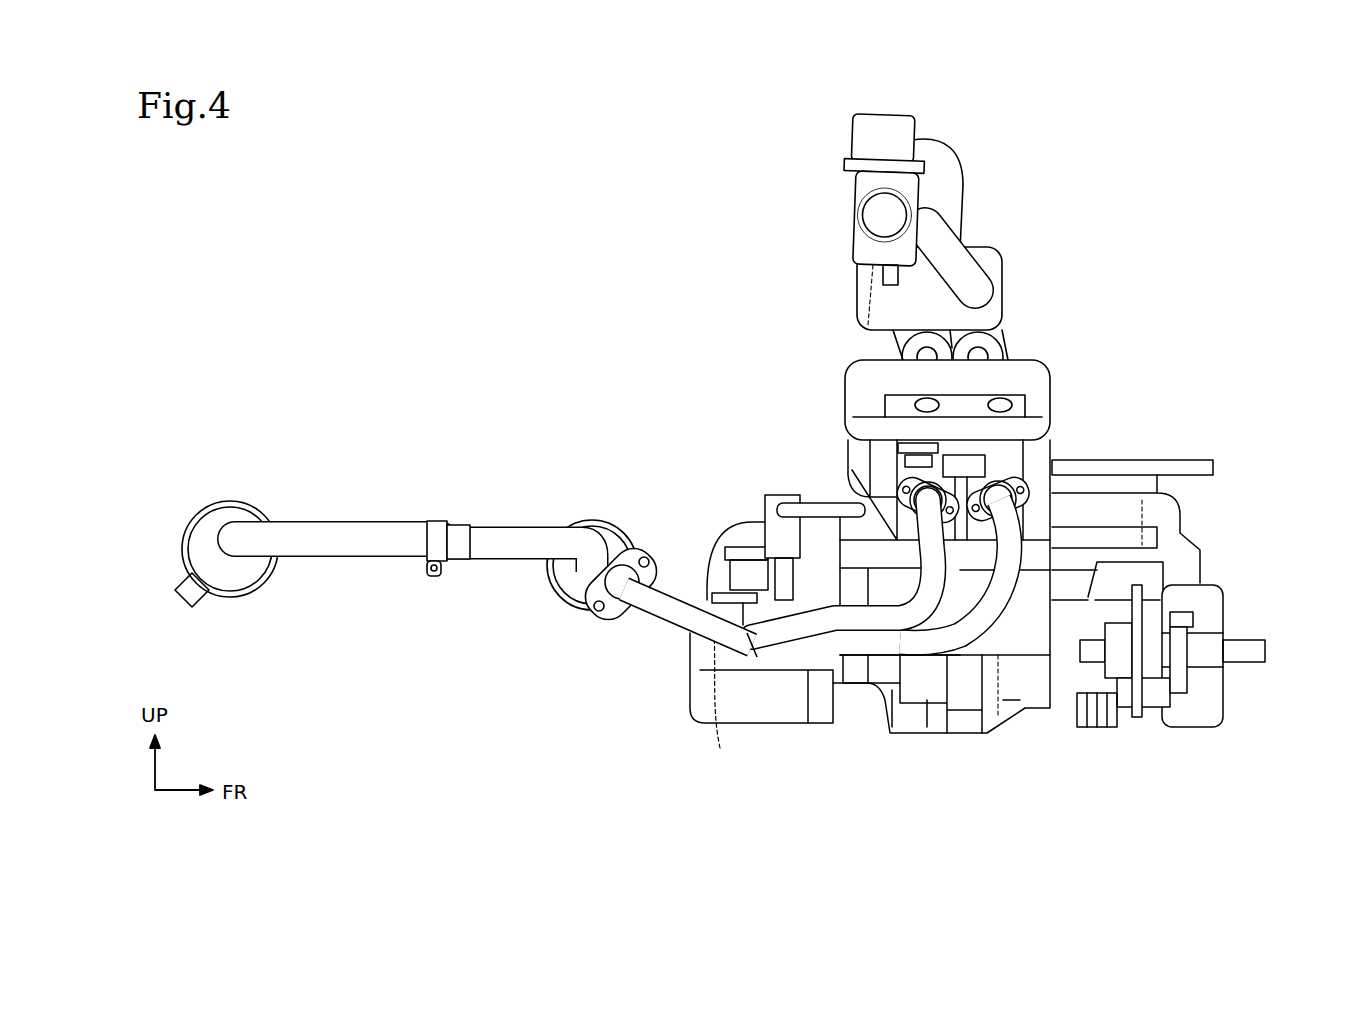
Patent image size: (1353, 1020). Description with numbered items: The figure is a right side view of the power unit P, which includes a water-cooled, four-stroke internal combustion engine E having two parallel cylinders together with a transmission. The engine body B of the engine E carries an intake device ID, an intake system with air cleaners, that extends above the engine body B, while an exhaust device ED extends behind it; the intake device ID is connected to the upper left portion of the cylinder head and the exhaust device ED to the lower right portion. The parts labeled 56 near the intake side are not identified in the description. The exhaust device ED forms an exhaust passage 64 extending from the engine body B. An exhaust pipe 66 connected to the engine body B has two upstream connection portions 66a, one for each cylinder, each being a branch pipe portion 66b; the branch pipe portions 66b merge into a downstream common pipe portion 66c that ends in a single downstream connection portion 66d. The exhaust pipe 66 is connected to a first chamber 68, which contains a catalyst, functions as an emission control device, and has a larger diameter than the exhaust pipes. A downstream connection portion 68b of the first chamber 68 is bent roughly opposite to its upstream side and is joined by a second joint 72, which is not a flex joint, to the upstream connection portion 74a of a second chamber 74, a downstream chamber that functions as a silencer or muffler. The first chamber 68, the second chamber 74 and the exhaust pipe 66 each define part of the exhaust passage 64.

The intake device ID is at (972, 141).
The internal combustion engine E is at (1015, 310).
The engine body B is at (883, 395).
The power unit P is at (728, 326).
The throttle body 56 is at (902, 350).
The exhaust passage 64 is at (761, 704).
The exhaust pipe 66 is at (920, 650).
The upstream connection portion 66a is at (900, 493).
The branch pipe portion 66b is at (810, 617).
The downstream common pipe portion 66c is at (672, 617).
The downstream connection portion 66d is at (617, 600).
The first chamber 68 is at (588, 520).
The downstream connection portion 68b is at (505, 527).
The second joint 72 is at (434, 520).
The second chamber 74 is at (253, 513).
The upstream connection portion 74a is at (352, 560).
The exhaust device ED is at (528, 588).